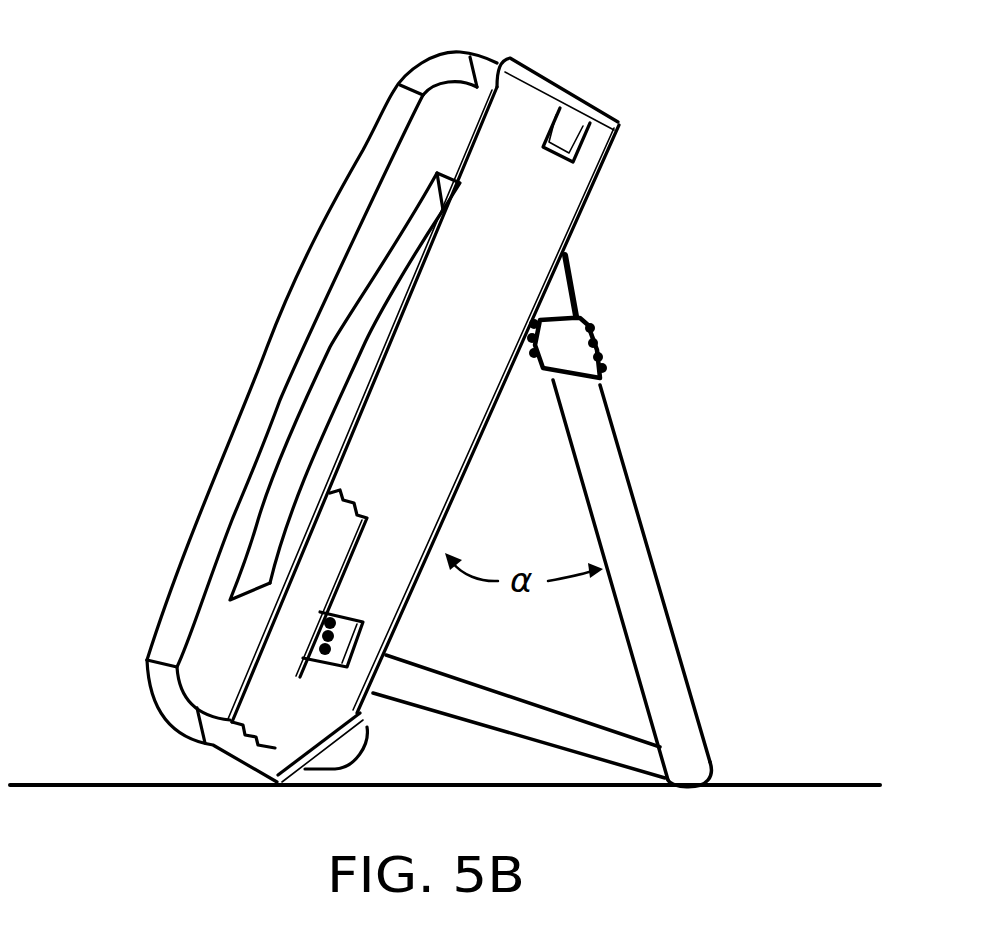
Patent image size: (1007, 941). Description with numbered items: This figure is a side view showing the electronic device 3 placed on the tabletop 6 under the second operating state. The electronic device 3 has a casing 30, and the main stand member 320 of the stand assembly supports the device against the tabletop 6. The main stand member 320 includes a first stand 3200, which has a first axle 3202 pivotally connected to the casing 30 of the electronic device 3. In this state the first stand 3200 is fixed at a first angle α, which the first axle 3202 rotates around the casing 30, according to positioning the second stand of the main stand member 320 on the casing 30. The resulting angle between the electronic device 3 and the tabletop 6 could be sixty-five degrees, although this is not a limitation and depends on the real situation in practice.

The electronic device 3 is at (217, 95).
The casing 30 is at (513, 217).
The main stand member 320 is at (633, 521).
The first stand 3200 is at (627, 530).
The first axle 3202 is at (602, 728).
The tabletop 6 is at (60, 785).